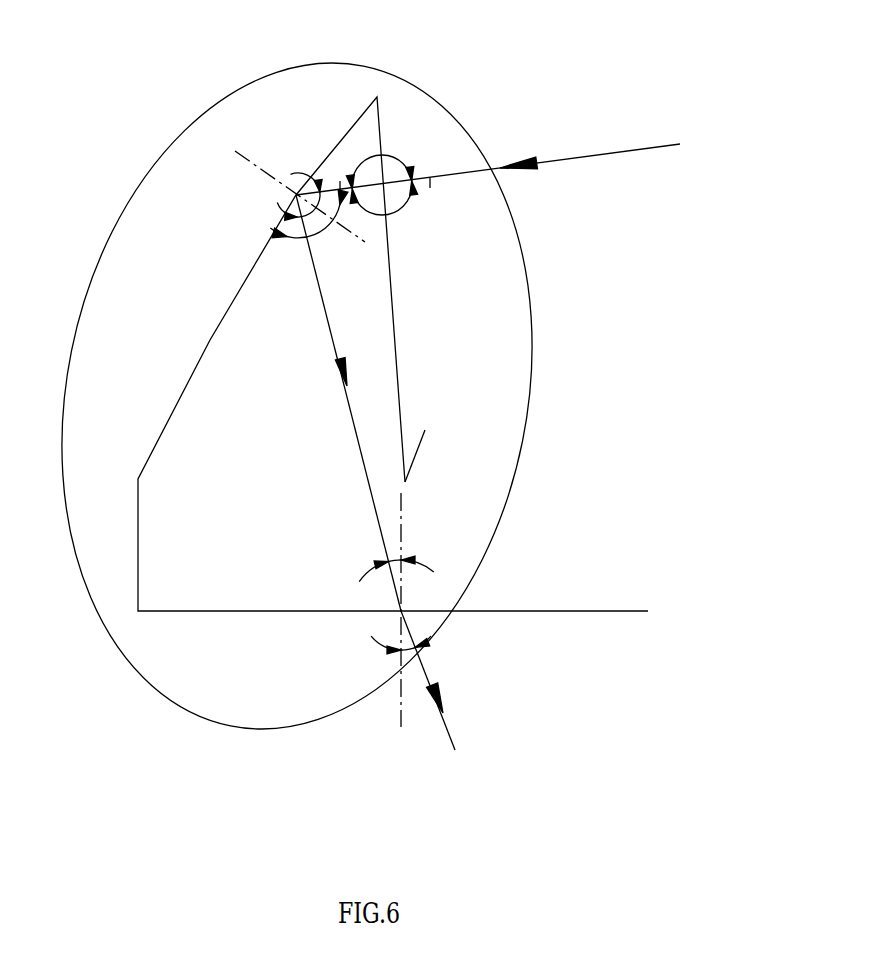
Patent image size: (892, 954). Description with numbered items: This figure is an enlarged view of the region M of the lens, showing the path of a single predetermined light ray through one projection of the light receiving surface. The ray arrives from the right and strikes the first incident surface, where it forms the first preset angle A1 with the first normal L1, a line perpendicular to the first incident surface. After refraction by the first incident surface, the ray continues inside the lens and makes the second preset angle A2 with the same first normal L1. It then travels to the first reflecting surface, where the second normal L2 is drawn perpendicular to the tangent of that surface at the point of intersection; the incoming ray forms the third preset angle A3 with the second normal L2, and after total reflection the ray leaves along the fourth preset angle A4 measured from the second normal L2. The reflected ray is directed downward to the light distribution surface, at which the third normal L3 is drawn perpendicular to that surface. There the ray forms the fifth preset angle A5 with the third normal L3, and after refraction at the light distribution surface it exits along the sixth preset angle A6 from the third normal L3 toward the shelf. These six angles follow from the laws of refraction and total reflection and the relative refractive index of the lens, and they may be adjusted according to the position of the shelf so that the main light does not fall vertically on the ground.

The first preset angle A1 is at (412, 181).
The second preset angle A2 is at (352, 188).
The third preset angle A3 is at (296, 195).
The fourth preset angle A4 is at (315, 229).
The fifth preset angle A5 is at (388, 560).
The sixth preset angle A6 is at (401, 650).
The first normal L1 is at (580, 209).
The second normal L2 is at (280, 185).
The third normal L3 is at (515, 568).
The enlarged region M is at (531, 352).